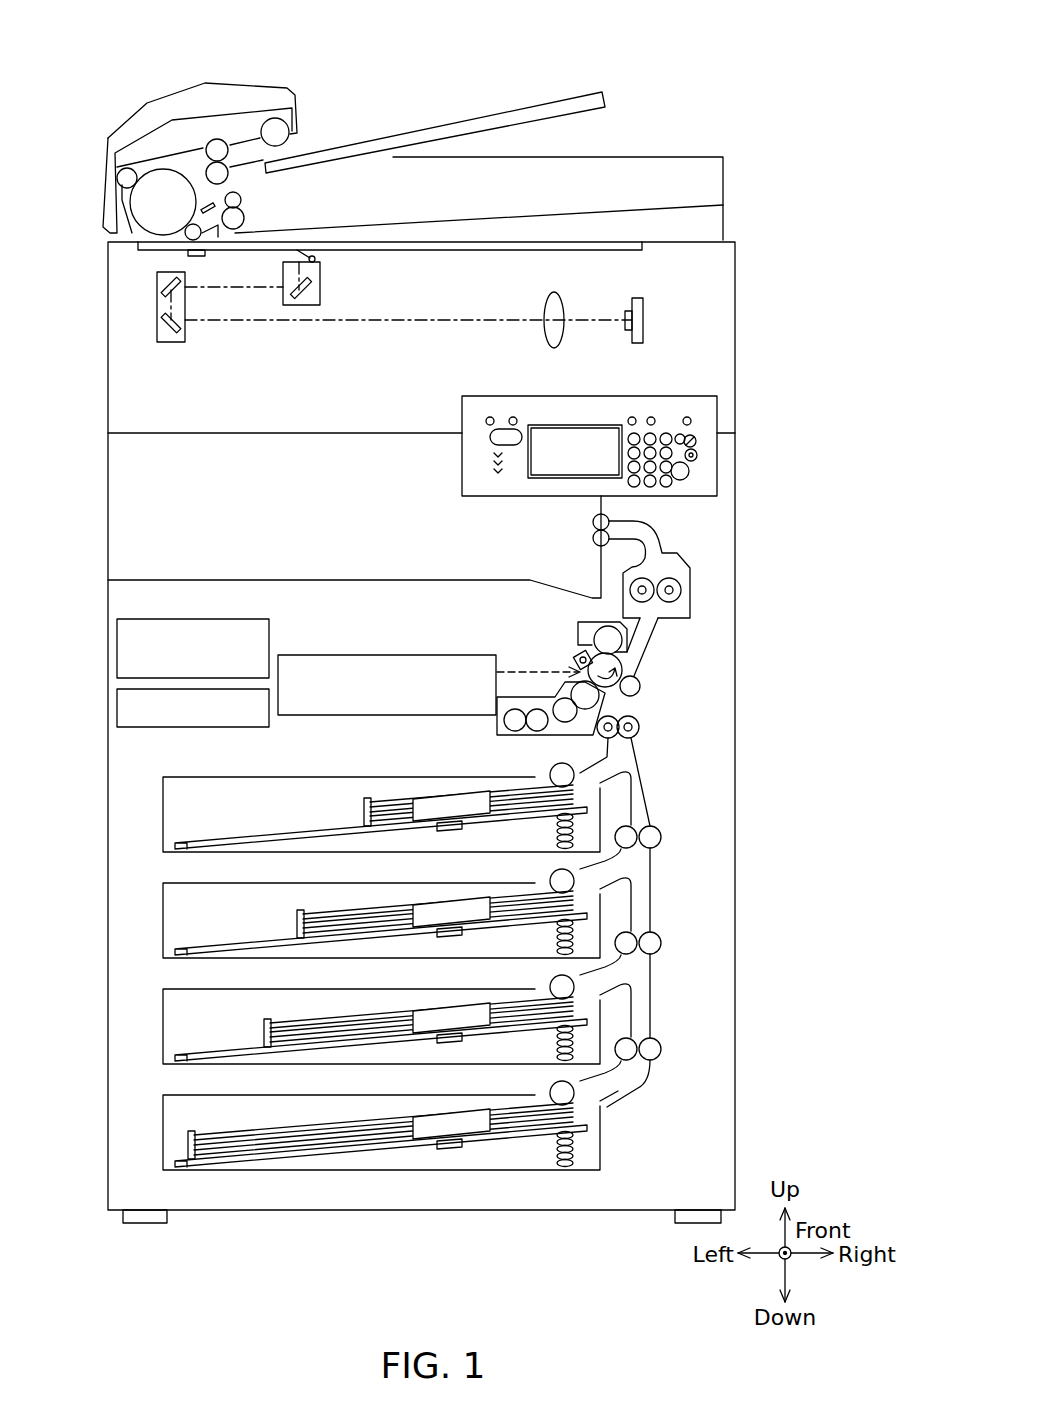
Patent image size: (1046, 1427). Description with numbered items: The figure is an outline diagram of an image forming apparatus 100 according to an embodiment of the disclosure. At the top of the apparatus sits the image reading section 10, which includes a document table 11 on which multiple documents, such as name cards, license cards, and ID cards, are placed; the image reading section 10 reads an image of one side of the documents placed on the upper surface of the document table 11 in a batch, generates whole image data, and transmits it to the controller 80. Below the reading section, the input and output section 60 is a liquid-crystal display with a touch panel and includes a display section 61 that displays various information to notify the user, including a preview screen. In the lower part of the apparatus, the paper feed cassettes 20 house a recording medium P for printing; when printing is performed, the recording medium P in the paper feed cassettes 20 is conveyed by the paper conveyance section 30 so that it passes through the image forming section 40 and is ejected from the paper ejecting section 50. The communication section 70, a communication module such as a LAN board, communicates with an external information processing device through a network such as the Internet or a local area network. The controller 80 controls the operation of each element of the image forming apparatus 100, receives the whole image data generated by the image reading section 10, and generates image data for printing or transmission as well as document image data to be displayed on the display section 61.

The image forming apparatus 100 is at (684, 74).
The image reading section 10 is at (271, 368).
The document table 11 is at (633, 241).
The paper feed cassettes 20 is at (319, 966).
The paper conveyance section 30 is at (679, 1125).
The image forming section 40 is at (677, 722).
The paper ejecting section 50 is at (583, 533).
The input and output section 60 is at (623, 425).
The display section 61 is at (584, 423).
The communication section 70 is at (117, 650).
The controller 80 is at (117, 700).
The recording medium P is at (374, 803).